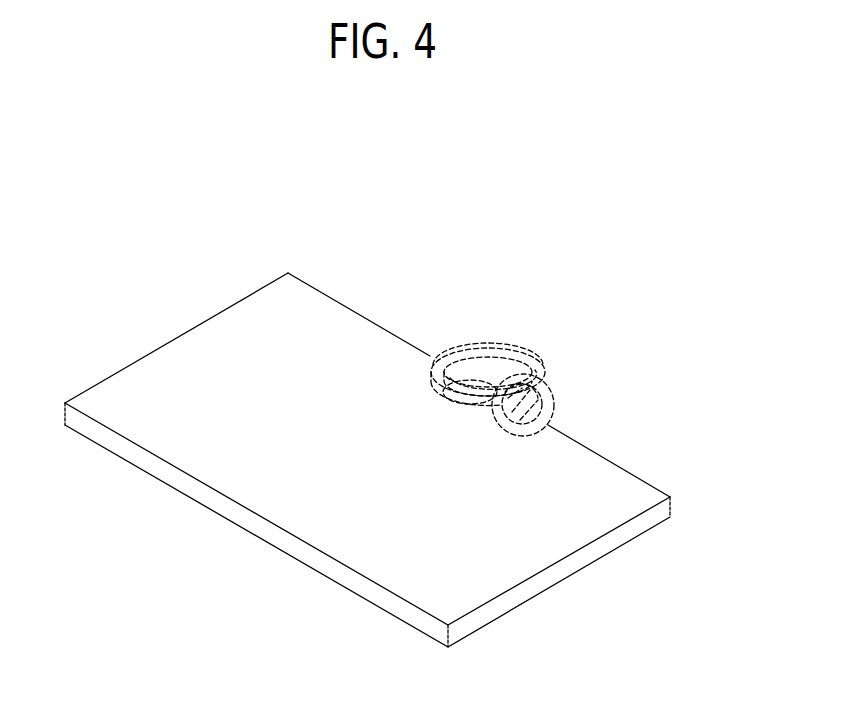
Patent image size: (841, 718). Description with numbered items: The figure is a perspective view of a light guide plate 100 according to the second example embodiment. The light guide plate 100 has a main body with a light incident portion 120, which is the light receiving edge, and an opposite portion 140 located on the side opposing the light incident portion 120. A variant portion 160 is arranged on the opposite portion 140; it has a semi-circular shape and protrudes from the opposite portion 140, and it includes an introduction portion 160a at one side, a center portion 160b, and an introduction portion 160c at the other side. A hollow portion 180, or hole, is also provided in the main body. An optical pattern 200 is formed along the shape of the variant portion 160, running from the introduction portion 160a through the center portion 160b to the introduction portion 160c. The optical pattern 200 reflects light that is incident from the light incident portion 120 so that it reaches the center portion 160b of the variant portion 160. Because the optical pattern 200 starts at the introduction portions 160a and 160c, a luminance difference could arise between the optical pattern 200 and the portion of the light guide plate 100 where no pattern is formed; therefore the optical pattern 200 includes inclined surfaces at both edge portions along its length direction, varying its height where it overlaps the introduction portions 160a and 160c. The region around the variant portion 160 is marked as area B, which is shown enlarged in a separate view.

The light guide plate 100 is at (164, 218).
The light incident portion 120 is at (285, 540).
The opposite portion 140 is at (645, 482).
The variant portion 160 is at (533, 360).
The introduction portion 160a is at (437, 357).
The center portion 160b is at (515, 352).
The introduction portion 160c is at (556, 402).
The hollow portion 180 is at (485, 377).
The optical pattern 200 is at (537, 366).
The area B is at (548, 412).